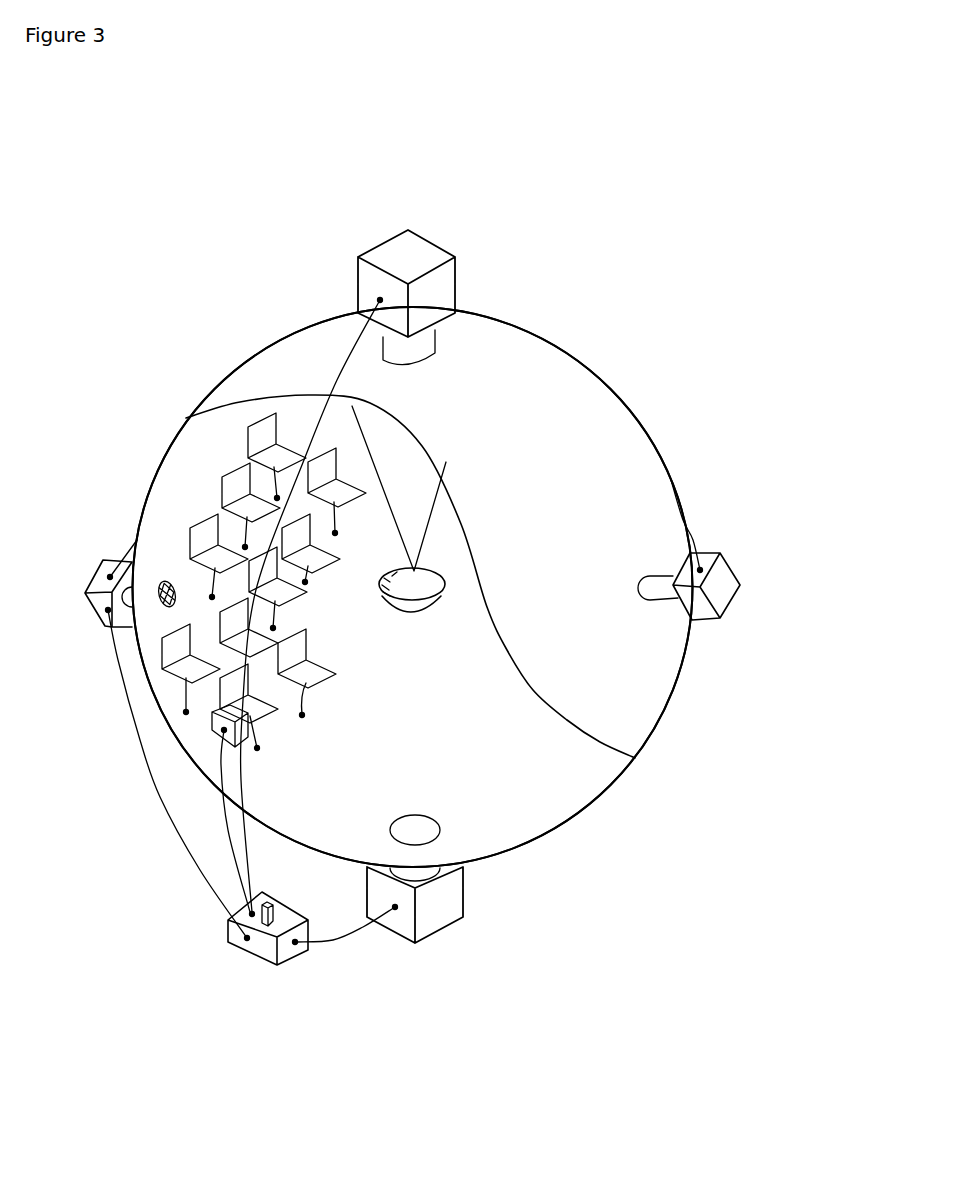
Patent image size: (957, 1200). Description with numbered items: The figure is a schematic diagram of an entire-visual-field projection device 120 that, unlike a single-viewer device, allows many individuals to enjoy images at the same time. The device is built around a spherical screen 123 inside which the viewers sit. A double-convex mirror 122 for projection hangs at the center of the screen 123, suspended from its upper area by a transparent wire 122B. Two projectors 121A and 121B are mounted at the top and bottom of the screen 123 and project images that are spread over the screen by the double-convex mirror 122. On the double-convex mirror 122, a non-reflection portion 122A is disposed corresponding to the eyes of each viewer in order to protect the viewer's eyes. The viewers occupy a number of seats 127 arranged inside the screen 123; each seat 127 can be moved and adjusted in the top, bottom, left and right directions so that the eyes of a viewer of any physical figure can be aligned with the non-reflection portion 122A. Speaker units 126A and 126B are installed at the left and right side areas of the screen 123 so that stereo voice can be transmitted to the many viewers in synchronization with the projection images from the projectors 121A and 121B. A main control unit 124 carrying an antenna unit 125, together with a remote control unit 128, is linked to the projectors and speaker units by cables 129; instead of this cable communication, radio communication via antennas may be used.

The entire-visual-field projection device 120 is at (621, 277).
The projector 121A is at (475, 263).
The projector 121B is at (481, 910).
The double-convex mirror for projection 122 is at (438, 590).
The non-reflection portion 122A is at (392, 578).
The transparent wire 122B is at (362, 432).
The screen 123 is at (565, 373).
The main control unit 124 is at (292, 955).
The antenna unit 125 is at (268, 906).
The speaker unit 126A is at (732, 583).
The speaker unit 126B is at (98, 606).
The seat portion 127 is at (205, 523).
The remote control unit 128 is at (212, 723).
The cable 129 is at (697, 533).